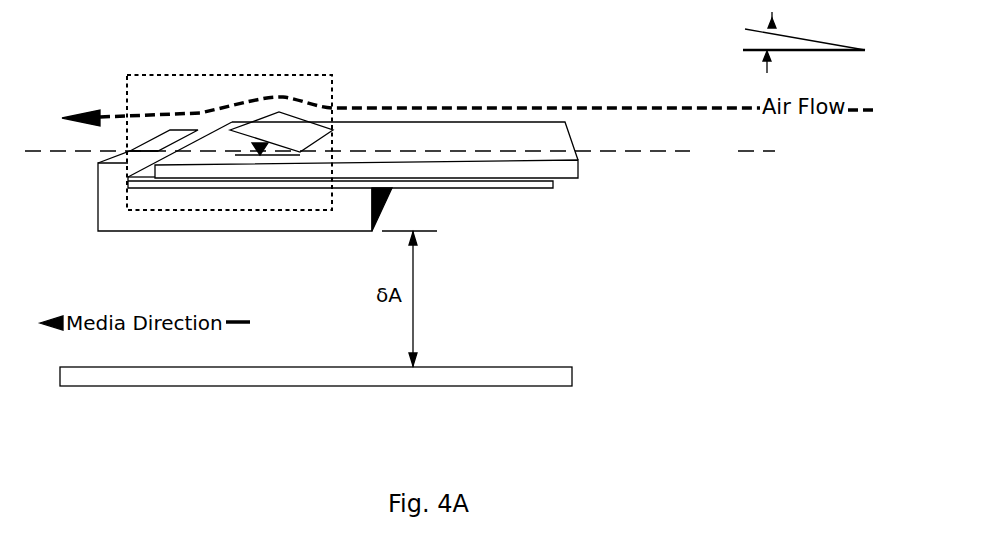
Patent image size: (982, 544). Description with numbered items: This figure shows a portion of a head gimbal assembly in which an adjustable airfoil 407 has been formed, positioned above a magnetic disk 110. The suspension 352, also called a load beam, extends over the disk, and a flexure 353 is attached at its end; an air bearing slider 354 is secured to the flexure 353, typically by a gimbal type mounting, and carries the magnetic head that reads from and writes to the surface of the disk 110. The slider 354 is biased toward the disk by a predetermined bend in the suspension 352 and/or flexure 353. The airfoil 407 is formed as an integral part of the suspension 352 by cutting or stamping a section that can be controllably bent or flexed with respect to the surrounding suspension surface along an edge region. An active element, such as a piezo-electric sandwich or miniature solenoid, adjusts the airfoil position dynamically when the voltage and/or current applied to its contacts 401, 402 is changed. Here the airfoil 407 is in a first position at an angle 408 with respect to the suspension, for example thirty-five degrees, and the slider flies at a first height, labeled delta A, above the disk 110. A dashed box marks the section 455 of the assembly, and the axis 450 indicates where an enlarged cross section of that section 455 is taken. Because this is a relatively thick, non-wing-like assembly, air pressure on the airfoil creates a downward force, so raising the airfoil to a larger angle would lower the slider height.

The magnetic disk 110 is at (553, 357).
The suspension 352 is at (500, 130).
The flexure 353 is at (535, 188).
The air bearing slider 354 is at (98, 232).
The contact 401 is at (253, 125).
The contact 402 is at (233, 155).
The adjustable airfoil 407 is at (282, 133).
The angle 408 is at (791, 46).
The axis 450 is at (400, 151).
The section 455 is at (125, 73).